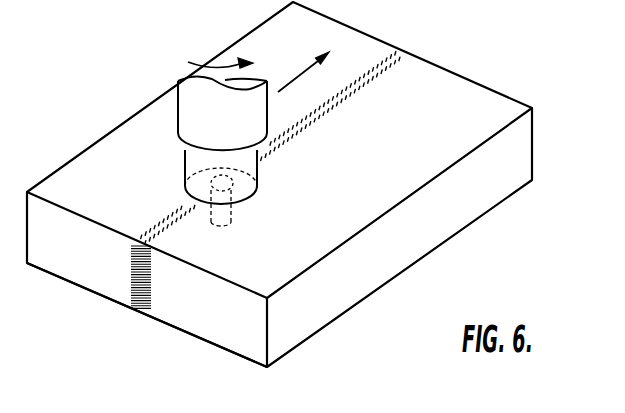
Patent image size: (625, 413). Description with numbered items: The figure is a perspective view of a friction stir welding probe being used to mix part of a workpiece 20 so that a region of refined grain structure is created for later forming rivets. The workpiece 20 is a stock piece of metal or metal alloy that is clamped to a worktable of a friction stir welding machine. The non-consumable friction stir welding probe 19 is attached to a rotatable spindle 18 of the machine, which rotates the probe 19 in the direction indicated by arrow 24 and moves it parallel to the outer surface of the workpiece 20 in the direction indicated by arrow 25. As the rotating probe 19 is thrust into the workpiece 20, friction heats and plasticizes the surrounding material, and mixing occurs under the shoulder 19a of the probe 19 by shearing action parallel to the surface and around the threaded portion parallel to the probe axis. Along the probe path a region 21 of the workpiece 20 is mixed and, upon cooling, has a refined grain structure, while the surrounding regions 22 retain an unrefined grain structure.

The rotatable spindle 18 is at (178, 115).
The friction stir welding probe 19 is at (236, 225).
The shoulder 19a is at (234, 203).
The workpiece 20 is at (533, 144).
The region having a refined grain structure 21 is at (142, 304).
The region having an unrefined grain structure 22 is at (65, 279).
The arrow indicating direction of rotation 24 is at (198, 62).
The arrow indicating direction of probe movement 25 is at (286, 86).